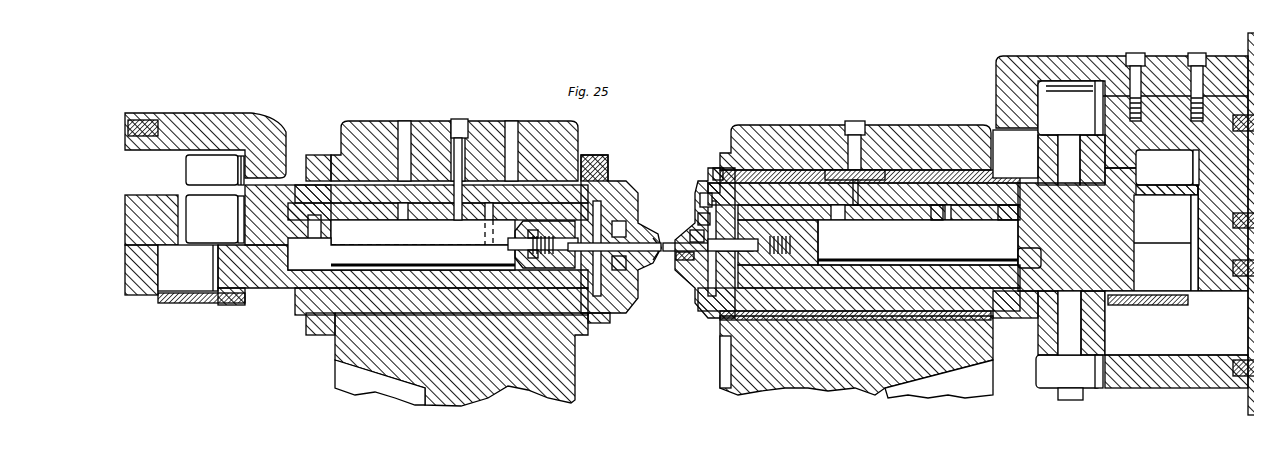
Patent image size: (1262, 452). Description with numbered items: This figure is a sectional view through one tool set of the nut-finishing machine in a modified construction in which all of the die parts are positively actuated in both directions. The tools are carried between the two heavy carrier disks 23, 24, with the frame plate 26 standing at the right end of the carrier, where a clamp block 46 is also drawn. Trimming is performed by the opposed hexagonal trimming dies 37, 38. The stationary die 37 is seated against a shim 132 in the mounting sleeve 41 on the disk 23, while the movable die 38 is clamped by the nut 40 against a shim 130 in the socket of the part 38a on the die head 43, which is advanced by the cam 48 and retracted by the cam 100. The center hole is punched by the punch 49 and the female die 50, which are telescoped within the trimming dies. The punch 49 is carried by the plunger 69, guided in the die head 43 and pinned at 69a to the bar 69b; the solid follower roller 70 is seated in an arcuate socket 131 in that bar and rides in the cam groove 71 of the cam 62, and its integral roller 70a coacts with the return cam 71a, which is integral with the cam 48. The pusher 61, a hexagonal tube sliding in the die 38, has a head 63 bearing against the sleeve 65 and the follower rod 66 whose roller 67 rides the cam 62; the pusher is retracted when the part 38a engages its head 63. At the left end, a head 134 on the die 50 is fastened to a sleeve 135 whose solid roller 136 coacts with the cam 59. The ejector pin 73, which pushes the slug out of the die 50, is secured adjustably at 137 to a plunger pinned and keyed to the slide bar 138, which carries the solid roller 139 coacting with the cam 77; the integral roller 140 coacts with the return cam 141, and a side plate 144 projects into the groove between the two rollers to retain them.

The carrier disk 23 is at (427, 120).
The carrier disk 24 is at (880, 118).
The frame plate 26 is at (1243, 400).
The trimming die 37 is at (637, 262).
The trimming die 38 is at (690, 211).
The part of die head 38a is at (712, 162).
The nut 40 is at (692, 192).
The sleeve 41 is at (604, 173).
The die head 43 is at (705, 312).
The clamp block 46 is at (1036, 100).
The cam 48 is at (1092, 100).
The punch 49 is at (668, 247).
The female die 50 is at (622, 229).
The cam 59 is at (140, 290).
The pusher 61 is at (682, 228).
The cam 62 is at (1195, 290).
The head 63 is at (742, 205).
The sleeve 65 is at (795, 200).
The follower rod 66 is at (1008, 284).
The roller 67 is at (1160, 297).
The plunger 69 is at (929, 244).
The pin 69a is at (935, 212).
The bar 69b is at (1005, 210).
The follower roller 70 is at (1170, 232).
The roller 70a is at (1190, 160).
The cam groove 71 is at (1190, 190).
The return cam 71a is at (1164, 167).
The ejector pin 73 is at (648, 226).
The cam 77 is at (168, 192).
The cam 100 is at (1022, 120).
The shim 130 is at (700, 178).
The arcuate socket 131 is at (1128, 208).
The shim 132 is at (625, 272).
The head 134 is at (598, 308).
The sleeve 135 is at (441, 301).
The roller 136 is at (200, 287).
The adjustable securement 137 is at (532, 244).
The slide bar 138 is at (423, 232).
The roller 139 is at (237, 212).
The roller 140 is at (178, 158).
The return cam 141 is at (232, 160).
The side plate 144 is at (215, 219).